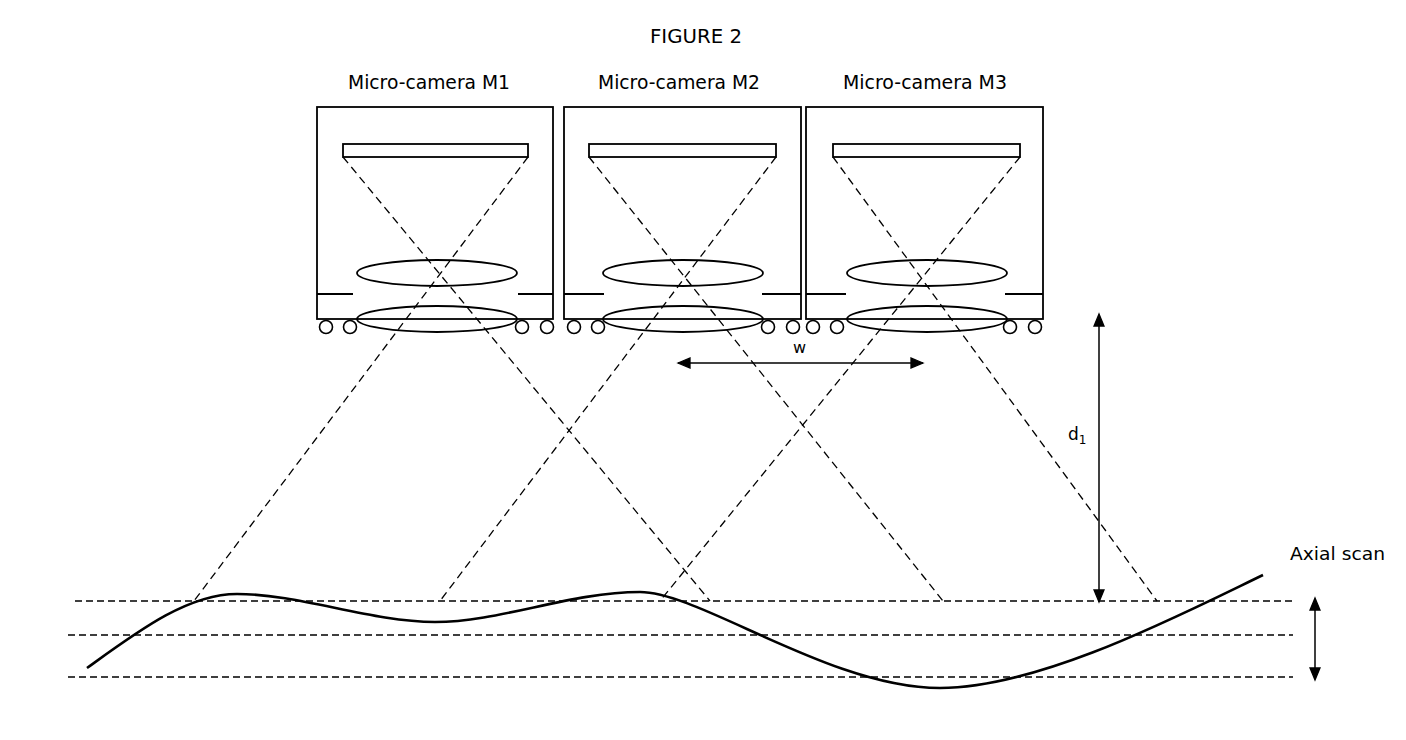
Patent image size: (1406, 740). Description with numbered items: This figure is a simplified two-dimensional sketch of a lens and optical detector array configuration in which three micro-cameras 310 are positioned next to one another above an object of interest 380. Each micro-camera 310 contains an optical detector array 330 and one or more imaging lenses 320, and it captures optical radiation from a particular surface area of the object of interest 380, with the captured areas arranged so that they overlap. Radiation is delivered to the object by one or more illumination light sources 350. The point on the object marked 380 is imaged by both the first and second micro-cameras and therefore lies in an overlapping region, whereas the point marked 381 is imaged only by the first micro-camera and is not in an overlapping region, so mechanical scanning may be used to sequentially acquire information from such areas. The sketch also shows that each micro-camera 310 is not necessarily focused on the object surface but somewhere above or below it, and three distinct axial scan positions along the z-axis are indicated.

The micro-camera 310 is at (317, 133).
The optical detector array 330 is at (467, 153).
The imaging lenses 320 is at (513, 270).
The illumination light sources 350 is at (318, 327).
The object of interest 380 is at (623, 592).
The point on the object in a non-overlapping region 381 is at (307, 602).